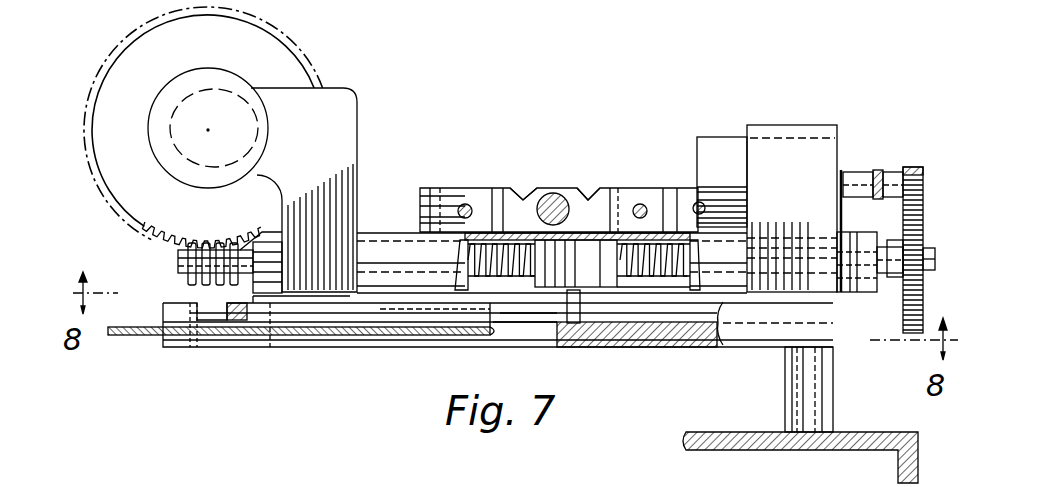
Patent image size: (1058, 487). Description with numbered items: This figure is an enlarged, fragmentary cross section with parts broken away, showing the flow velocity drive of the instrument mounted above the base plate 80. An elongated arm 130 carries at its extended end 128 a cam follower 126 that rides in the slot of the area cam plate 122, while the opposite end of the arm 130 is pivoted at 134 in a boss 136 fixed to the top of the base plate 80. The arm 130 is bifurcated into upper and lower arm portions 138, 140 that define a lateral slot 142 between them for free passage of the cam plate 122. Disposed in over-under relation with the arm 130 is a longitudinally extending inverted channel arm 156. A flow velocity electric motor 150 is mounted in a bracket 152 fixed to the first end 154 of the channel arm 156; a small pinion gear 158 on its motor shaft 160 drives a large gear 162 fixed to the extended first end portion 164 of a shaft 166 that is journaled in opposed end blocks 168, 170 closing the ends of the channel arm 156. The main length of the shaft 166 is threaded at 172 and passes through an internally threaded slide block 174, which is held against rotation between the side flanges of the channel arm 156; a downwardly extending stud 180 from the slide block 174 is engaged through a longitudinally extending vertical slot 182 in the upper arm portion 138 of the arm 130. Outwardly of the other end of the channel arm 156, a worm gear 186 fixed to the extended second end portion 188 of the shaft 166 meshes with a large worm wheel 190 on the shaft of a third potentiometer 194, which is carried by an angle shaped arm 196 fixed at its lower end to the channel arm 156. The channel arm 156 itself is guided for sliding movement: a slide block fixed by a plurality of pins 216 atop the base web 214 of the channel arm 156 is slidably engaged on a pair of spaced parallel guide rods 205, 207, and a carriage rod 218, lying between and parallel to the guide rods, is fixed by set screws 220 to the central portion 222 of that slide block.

The base plate 80 is at (750, 416).
The area cam plate 122 is at (369, 336).
The cam follower 126 is at (184, 328).
The extended end 128 is at (180, 305).
The elongated arm 130 is at (327, 312).
The pivot 134 is at (822, 378).
The boss 136 is at (787, 370).
The upper arm portion 138 is at (540, 326).
The lower arm portion 140 is at (528, 322).
The lateral slot 142 is at (494, 326).
The flow velocity electric motor 150 is at (720, 182).
The bracket 152 is at (794, 208).
The first end 154 is at (858, 242).
The inverted channel arm 156 is at (392, 222).
The pinion gear 158 is at (913, 168).
The motor shaft 160 is at (880, 171).
The large gear 162 is at (930, 212).
The first end portion 164 is at (935, 262).
The shaft 166 is at (895, 278).
The end block 168 is at (848, 290).
The end block 170 is at (276, 337).
The threaded portion 172 is at (662, 272).
The slide block 174 is at (611, 322).
The stud 180 is at (572, 325).
The vertical slot 182 is at (497, 310).
The worm gear 186 is at (180, 260).
The second end portion 188 is at (258, 246).
The worm wheel 190 is at (130, 224).
The third potentiometer 194 is at (212, 180).
The angle shaped arm 196 is at (304, 190).
The guide rod 205 is at (472, 204).
The guide rod 207 is at (646, 204).
The base web 214 is at (600, 236).
The pins 216 is at (452, 192).
The carriage rod 218 is at (560, 195).
The set screws 220 is at (544, 199).
The central portion 222 is at (575, 186).